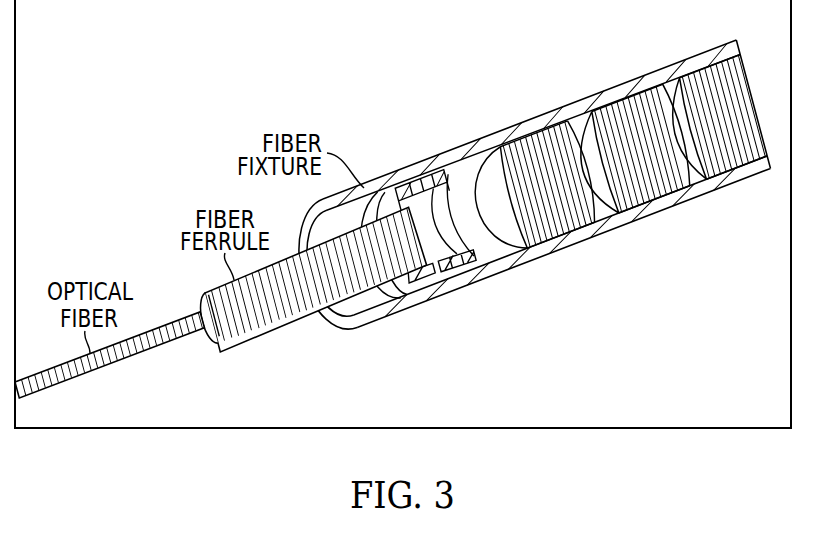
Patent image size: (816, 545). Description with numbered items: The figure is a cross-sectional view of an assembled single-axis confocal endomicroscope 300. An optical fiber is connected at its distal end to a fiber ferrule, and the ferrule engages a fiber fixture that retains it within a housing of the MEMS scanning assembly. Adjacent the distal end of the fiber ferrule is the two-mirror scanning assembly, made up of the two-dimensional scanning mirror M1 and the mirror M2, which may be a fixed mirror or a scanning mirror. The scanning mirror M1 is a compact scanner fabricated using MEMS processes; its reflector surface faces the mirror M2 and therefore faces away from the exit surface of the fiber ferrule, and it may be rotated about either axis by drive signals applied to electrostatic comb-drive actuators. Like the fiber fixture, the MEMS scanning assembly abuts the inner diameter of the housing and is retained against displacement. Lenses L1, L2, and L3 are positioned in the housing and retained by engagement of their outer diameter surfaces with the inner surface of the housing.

The single-axis confocal endomicroscope 300 is at (103, 65).
The lens L1 is at (530, 146).
The lens L2 is at (636, 102).
The lens L3 is at (717, 70).
The 2D scanning mirror M1 is at (420, 284).
The mirror M2 is at (477, 262).